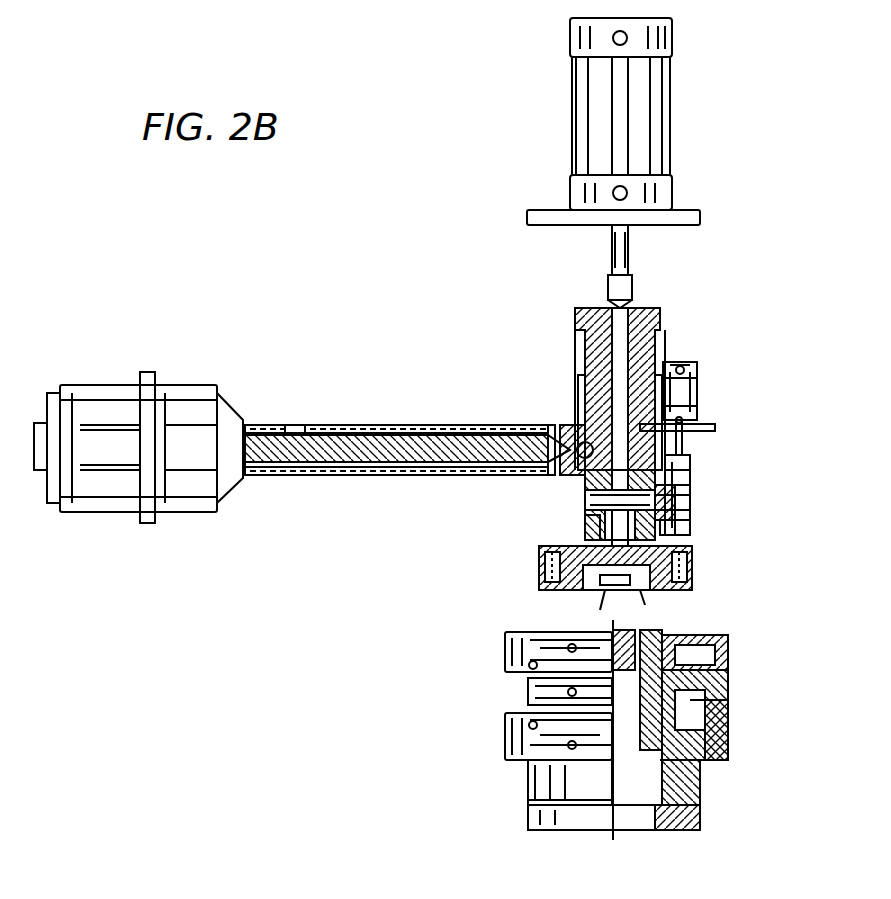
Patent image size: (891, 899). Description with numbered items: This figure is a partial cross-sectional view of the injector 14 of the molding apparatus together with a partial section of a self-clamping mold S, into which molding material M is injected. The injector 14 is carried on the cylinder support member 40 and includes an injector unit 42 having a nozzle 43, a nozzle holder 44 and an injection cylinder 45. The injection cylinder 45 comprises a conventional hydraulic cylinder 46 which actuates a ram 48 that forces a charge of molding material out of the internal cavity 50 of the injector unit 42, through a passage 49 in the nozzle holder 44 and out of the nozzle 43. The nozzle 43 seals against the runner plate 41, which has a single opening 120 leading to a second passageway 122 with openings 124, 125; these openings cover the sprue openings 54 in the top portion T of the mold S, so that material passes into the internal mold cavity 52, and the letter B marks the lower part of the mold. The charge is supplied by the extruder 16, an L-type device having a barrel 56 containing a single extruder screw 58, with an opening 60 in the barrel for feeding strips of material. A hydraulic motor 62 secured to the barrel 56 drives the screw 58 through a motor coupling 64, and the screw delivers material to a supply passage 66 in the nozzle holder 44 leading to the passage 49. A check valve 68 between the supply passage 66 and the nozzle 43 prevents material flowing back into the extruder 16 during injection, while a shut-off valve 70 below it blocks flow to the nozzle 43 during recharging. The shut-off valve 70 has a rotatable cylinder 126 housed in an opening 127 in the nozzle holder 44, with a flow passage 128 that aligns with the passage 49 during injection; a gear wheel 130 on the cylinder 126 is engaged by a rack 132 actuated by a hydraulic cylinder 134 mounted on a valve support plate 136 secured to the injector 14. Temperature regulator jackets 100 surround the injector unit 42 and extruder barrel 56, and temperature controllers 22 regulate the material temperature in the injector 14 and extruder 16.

The injector 14 is at (738, 120).
The extruder 16 is at (212, 298).
The temperature controllers 22 is at (650, 300).
The cylinder support member 40 is at (690, 214).
The runner plate 41 is at (692, 560).
The injector unit 42 is at (660, 318).
The nozzle 43 is at (539, 568).
The nozzle holder 44 is at (585, 492).
The injection cylinder 45 is at (573, 118).
The hydraulic cylinder 46 is at (585, 32).
The ram 48 is at (608, 282).
The passage 49 is at (690, 465).
The internal cavity 50 is at (685, 405).
The internal mold cavity 52 is at (728, 700).
The sprue openings 54 is at (640, 640).
The barrel 56 is at (500, 445).
The extruder screw 58 is at (390, 425).
The opening 60 is at (298, 420).
The hydraulic motor 62 is at (115, 380).
The motor coupling 64 is at (165, 520).
The supply passage 66 is at (578, 442).
The check valve 68 is at (565, 420).
The shut-off valve 70 is at (552, 520).
The temperature regulator jackets 100 is at (580, 400).
The opening 120 is at (687, 575).
The second passageway 122 is at (600, 605).
The opening 124 is at (600, 582).
The opening 125 is at (645, 602).
The rotatable cylinder 126 is at (680, 505).
The opening 127 is at (675, 527).
The flow passage 128 is at (585, 525).
The gear wheel 130 is at (690, 515).
The rack 132 is at (690, 450).
The hydraulic cylinder 134 is at (690, 365).
The valve support plate 136 is at (715, 428).
The self-clamping mold S is at (466, 722).
The top portion T is at (508, 655).
The molding material M is at (720, 725).
The base B is at (530, 815).